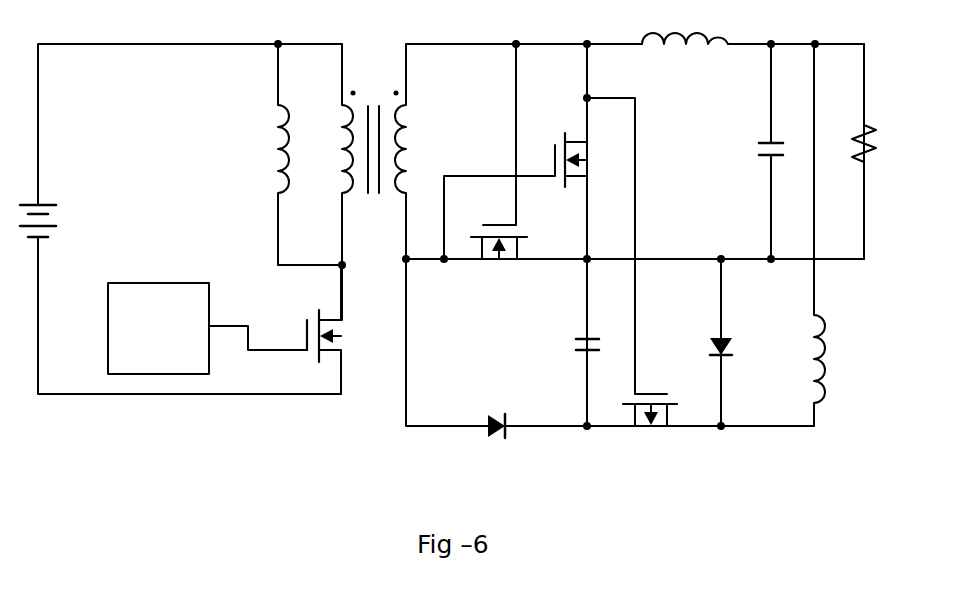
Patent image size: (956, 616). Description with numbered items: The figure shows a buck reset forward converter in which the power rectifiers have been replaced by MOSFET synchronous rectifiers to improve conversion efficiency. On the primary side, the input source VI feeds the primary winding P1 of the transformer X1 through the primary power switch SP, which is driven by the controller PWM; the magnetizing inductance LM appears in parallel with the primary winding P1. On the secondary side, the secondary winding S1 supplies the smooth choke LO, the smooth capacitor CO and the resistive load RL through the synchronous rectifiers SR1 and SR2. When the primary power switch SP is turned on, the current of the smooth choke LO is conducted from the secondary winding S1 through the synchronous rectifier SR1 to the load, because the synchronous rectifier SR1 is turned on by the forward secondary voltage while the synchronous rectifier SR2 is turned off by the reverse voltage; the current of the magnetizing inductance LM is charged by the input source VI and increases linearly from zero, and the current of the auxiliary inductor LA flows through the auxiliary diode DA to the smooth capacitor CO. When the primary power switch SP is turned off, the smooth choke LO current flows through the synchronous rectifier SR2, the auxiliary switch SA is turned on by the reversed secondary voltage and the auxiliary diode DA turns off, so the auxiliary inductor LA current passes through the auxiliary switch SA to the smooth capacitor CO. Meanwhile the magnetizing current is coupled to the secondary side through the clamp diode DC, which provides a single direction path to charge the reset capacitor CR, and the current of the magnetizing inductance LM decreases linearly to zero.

The input source VI is at (50, 223).
The magnetizing inductance LM is at (292, 154).
The transformer X1 is at (371, 182).
The primary winding P1 is at (331, 182).
The secondary winding S1 is at (414, 151).
The controller PWM is at (207, 328).
The primary power switch SP is at (342, 329).
The synchronous rectifier SR1 is at (499, 172).
The synchronous rectifier SR2 is at (515, 151).
The smooth choke LO is at (685, 22).
The smooth capacitor CO is at (752, 151).
The resistive load RL is at (848, 151).
The reset capacitor CR is at (563, 342).
The clamp diode DC is at (497, 441).
The auxiliary switch SA is at (632, 280).
The auxiliary diode DA is at (704, 342).
The auxiliary inductor LA is at (832, 235).